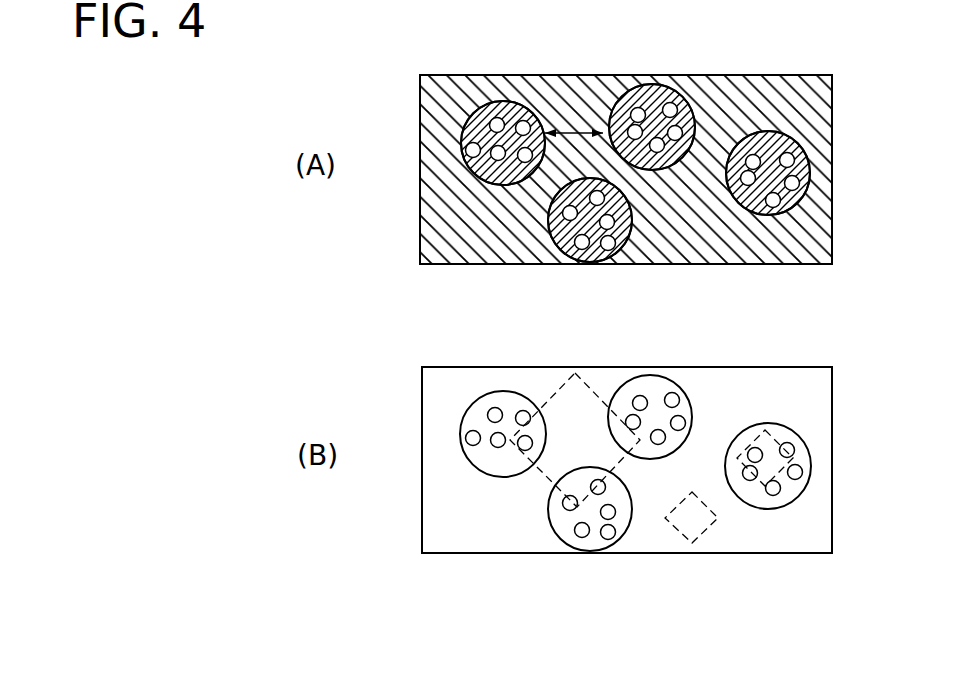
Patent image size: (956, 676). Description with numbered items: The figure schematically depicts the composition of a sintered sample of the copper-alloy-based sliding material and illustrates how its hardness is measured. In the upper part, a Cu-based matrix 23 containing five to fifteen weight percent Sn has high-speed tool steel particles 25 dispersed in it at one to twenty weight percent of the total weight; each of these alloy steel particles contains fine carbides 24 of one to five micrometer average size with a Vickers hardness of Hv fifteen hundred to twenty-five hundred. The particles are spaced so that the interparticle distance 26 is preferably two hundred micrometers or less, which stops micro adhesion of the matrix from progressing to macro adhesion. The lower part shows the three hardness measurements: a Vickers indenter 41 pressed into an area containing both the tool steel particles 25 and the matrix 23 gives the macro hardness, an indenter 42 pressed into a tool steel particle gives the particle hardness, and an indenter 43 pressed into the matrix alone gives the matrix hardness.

The Cu-based matrix 23 is at (692, 227).
The fine carbides 24 is at (773, 200).
The high-speed tool steel particles 25 is at (803, 150).
The interparticle distance 26 is at (573, 133).
The indenter 41 is at (592, 383).
The indenter 42 is at (783, 427).
The indenter 43 is at (705, 530).